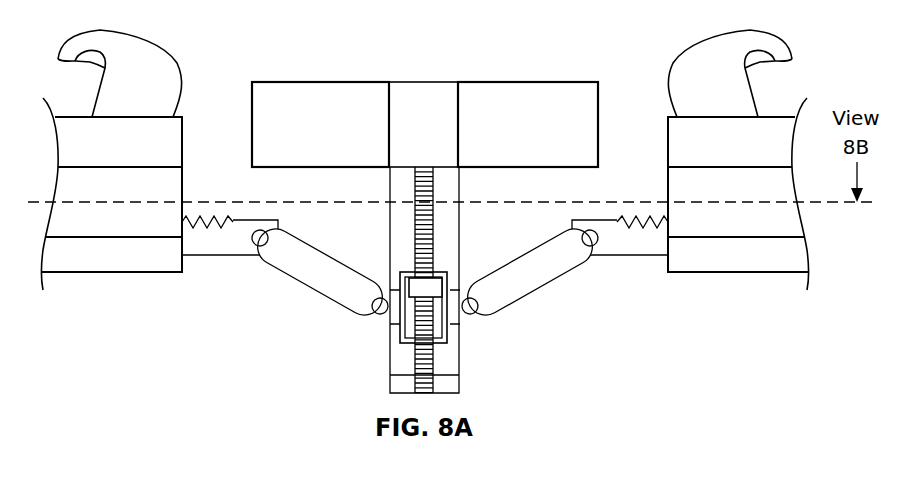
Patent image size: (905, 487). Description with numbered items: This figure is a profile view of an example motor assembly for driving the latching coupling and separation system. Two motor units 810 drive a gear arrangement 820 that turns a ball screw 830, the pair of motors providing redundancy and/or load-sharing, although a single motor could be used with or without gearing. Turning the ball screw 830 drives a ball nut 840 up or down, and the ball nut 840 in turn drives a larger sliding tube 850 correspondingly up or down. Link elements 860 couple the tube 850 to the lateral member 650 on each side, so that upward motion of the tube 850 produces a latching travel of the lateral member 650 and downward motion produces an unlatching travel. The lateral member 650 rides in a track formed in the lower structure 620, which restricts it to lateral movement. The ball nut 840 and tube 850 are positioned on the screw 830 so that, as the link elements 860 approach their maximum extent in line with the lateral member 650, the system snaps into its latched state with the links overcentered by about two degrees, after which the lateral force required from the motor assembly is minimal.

The lower structure 620 is at (733, 253).
The lateral member 650 is at (632, 245).
The motor unit 810 is at (322, 82).
The gear arrangement 820 is at (423, 82).
The ball screw 830 is at (433, 352).
The ball nut 840 is at (445, 277).
The tube 850 is at (403, 337).
The link element 860 is at (528, 270).